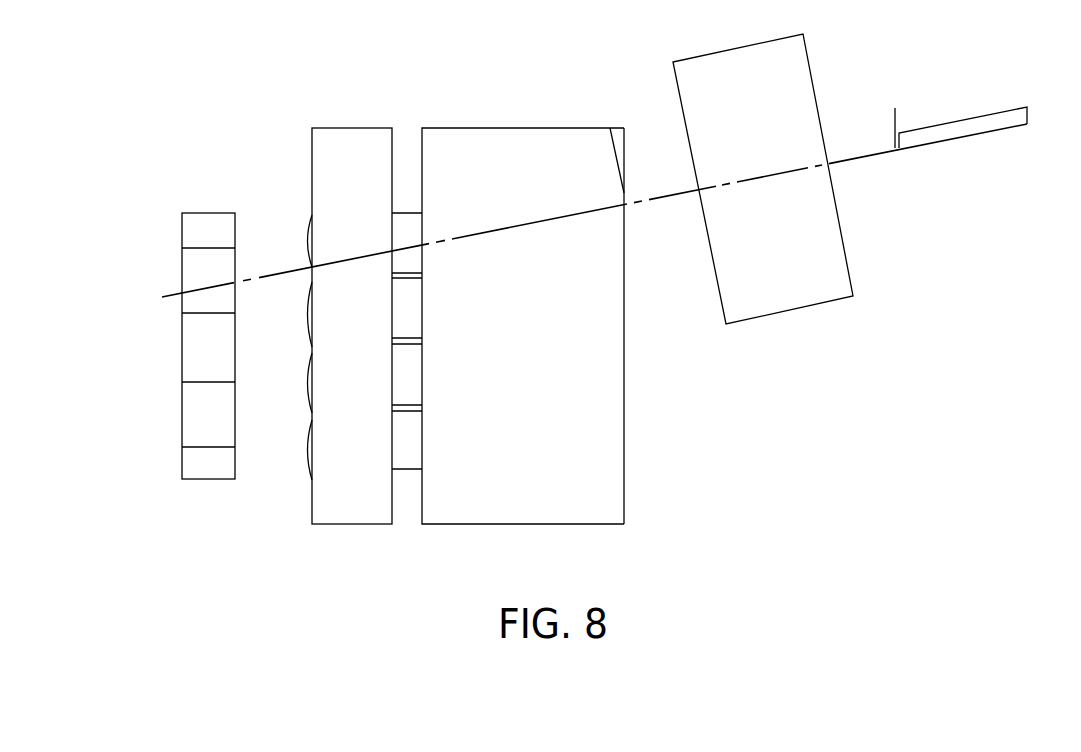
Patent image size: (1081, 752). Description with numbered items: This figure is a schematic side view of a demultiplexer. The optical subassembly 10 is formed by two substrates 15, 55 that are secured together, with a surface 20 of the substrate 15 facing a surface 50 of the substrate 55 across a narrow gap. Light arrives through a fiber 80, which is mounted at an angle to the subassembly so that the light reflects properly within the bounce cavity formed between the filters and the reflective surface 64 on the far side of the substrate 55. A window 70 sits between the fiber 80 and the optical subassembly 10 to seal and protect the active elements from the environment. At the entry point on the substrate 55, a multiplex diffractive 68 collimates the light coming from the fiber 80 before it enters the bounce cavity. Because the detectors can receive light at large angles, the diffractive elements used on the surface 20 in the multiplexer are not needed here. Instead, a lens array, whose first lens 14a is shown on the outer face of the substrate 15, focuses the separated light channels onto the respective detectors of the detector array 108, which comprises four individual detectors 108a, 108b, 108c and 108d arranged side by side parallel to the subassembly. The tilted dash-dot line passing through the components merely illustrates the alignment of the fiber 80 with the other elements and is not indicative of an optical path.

The optical assembly 10 is at (338, 324).
The lens array 14a is at (305, 238).
The substrate 15 is at (360, 313).
The surface 20 is at (338, 307).
The second lens unit 50 is at (546, 307).
The substrate 55 is at (546, 326).
The reflective surface 64 is at (626, 363).
The multiplex diffractive 68 is at (626, 190).
The window 70 is at (862, 278).
The fiber 80 is at (942, 115).
The detectors 108 is at (162, 318).
The detector 108a is at (182, 248).
The detector 108b is at (182, 313).
The detector 108c is at (182, 382).
The detector 108d is at (182, 447).